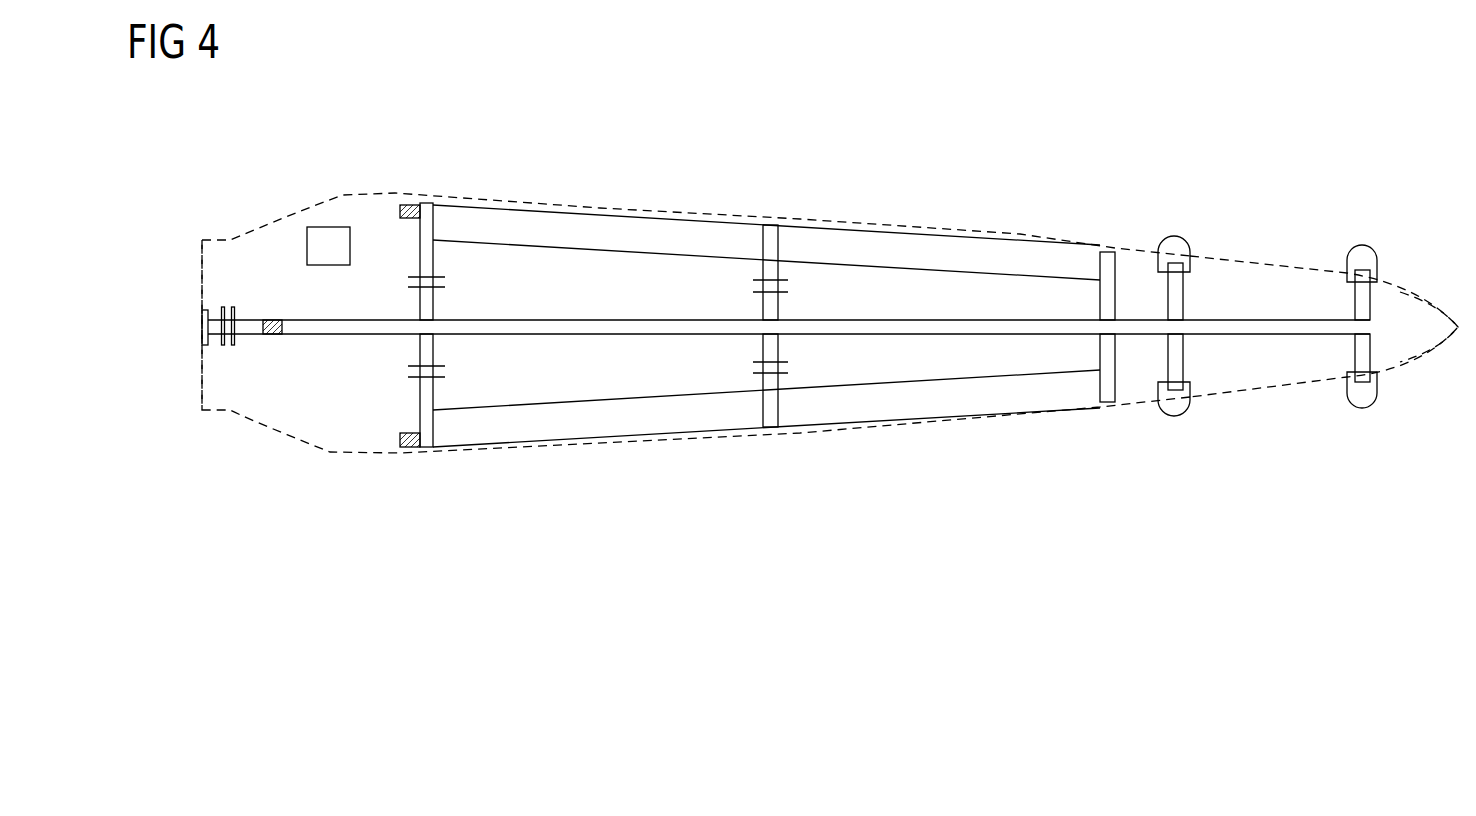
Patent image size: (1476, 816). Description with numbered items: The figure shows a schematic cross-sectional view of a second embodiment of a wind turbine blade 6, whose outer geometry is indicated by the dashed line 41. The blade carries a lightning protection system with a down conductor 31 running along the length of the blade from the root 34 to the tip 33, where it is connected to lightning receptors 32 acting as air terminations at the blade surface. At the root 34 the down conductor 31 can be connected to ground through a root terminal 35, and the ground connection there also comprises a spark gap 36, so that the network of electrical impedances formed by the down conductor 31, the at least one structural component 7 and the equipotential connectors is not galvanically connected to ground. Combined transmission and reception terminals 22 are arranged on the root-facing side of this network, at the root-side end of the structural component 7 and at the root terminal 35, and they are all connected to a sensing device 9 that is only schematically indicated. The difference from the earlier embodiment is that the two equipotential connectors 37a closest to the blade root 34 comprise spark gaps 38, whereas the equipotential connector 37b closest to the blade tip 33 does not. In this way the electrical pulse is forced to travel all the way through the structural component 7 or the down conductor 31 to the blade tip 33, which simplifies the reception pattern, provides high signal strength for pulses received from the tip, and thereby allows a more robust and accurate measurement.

The wind turbine blade 6 is at (938, 200).
The structural component 7 is at (635, 227).
The sensing device 9 is at (330, 227).
The combined transmission and reception terminal 22 is at (410, 203).
The down conductor 31 is at (582, 327).
The lightning receptor 32 is at (1170, 235).
The tip 33 is at (1258, 210).
The root 34 is at (172, 268).
The root terminal 35 is at (202, 333).
The spark gap 36 is at (226, 292).
The equipotential connector 37a is at (428, 452).
The equipotential connector 37b is at (1108, 390).
The spark gap 38 is at (452, 281).
The dashed line 41 is at (1433, 300).